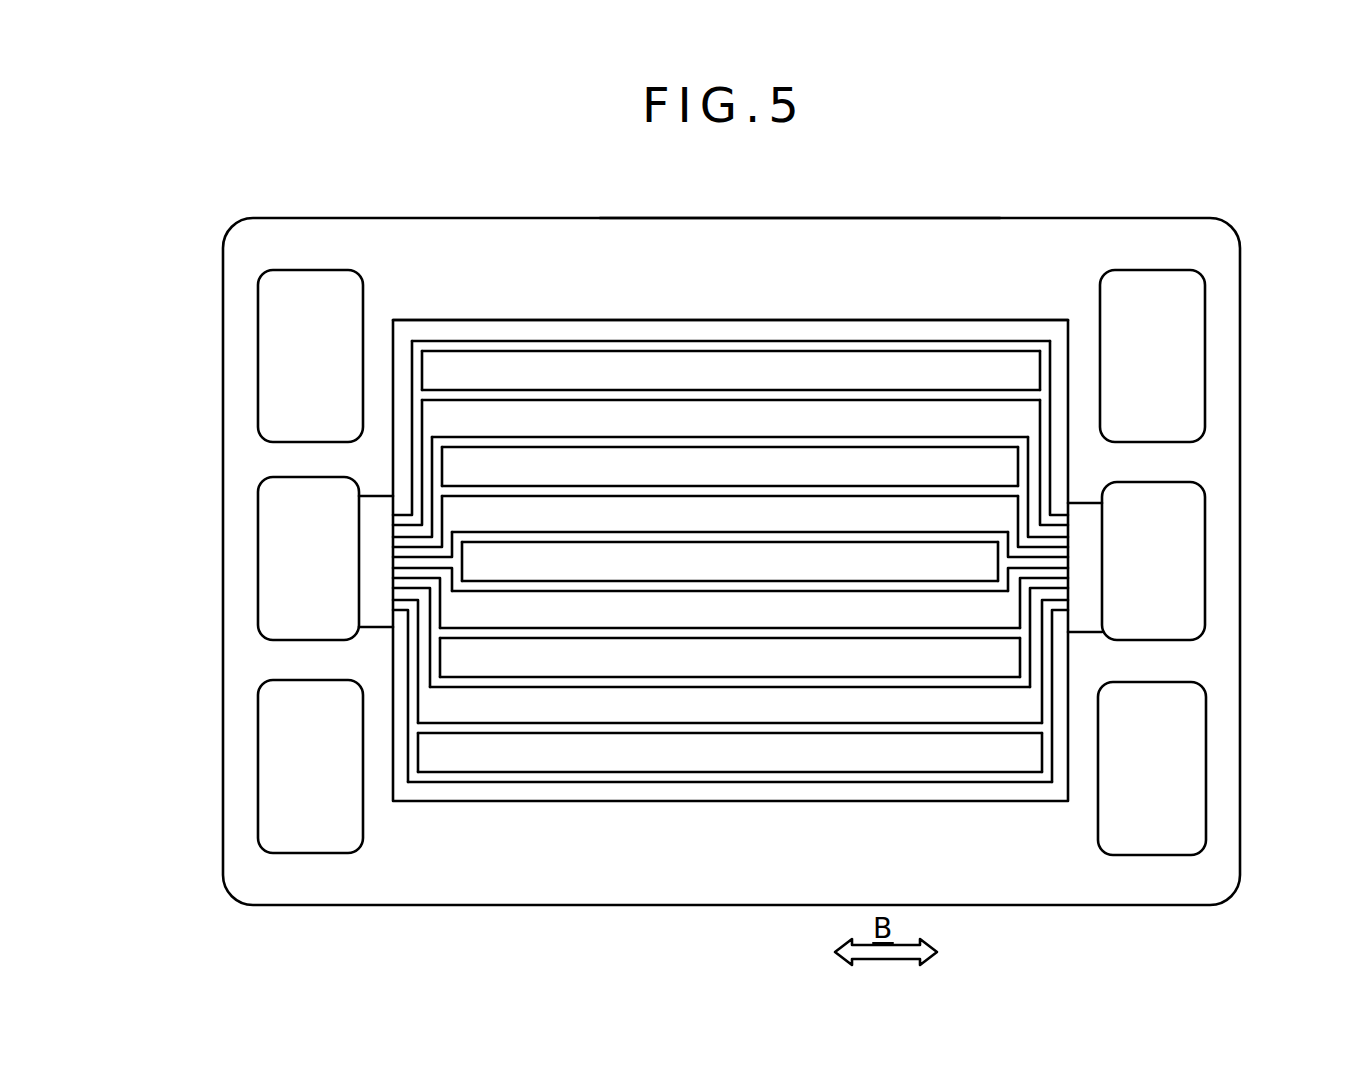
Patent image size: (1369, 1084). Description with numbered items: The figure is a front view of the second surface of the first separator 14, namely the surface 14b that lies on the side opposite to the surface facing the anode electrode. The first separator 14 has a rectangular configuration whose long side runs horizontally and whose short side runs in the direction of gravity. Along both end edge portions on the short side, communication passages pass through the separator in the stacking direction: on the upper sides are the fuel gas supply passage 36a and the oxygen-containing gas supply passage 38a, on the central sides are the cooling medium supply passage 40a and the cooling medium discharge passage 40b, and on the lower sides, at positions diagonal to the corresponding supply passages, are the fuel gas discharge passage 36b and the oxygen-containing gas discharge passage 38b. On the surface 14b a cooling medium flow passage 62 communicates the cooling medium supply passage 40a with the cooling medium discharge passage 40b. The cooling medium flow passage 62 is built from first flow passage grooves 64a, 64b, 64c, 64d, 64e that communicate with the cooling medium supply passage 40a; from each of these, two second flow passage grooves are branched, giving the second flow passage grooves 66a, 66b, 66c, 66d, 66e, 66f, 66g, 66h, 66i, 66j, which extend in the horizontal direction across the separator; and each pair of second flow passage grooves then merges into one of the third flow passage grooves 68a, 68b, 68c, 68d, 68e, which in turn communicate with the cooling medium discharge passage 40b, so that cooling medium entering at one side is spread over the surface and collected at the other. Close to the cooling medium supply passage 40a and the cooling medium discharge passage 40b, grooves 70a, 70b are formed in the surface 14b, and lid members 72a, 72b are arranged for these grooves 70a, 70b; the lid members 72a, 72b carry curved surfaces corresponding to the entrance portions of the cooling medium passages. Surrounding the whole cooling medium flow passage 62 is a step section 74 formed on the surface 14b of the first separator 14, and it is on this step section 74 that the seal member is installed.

The first separator 14 is at (950, 214).
The surface 14b is at (831, 233).
The fuel gas supply passage 36a is at (1166, 374).
The fuel gas discharge passage 36b is at (321, 779).
The oxygen-containing gas supply passage 38a is at (321, 374).
The oxygen-containing gas discharge passage 38b is at (1163, 784).
The cooling medium supply passage 40a is at (1166, 583).
The cooling medium discharge passage 40b is at (320, 576).
The cooling medium flow passage 62 is at (577, 336).
The first flow passage groove 64a is at (1039, 417).
The first flow passage groove 64b is at (1017, 515).
The first flow passage groove 64c is at (1006, 562).
The first flow passage groove 64d is at (1019, 611).
The first flow passage groove 64e is at (1041, 708).
The second flow passage groove 66a is at (724, 346).
The second flow passage groove 66b is at (776, 387).
The second flow passage groove 66c is at (776, 433).
The second flow passage groove 66d is at (776, 482).
The second flow passage groove 66e is at (776, 530).
The second flow passage groove 66f is at (776, 577).
The second flow passage groove 66g is at (778, 627).
The second flow passage groove 66h is at (776, 675).
The second flow passage groove 66i is at (776, 722).
The second flow passage groove 66j is at (776, 772).
The third flow passage groove 68a is at (423, 417).
The third flow passage groove 68b is at (518, 527).
The third flow passage groove 68c is at (518, 572).
The third flow passage groove 68d is at (441, 611).
The third flow passage groove 68e is at (419, 708).
The groove 70a is at (1090, 628).
The groove 70b is at (370, 618).
The lid member 72a is at (1083, 527).
The lid member 72b is at (372, 512).
The step section 74 is at (466, 803).